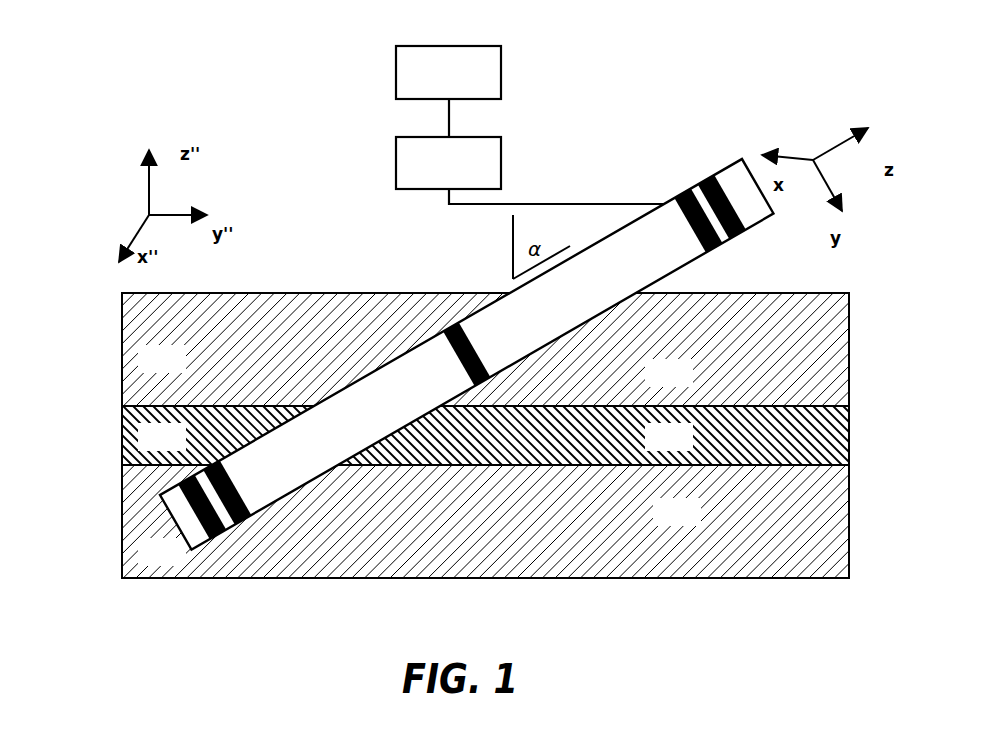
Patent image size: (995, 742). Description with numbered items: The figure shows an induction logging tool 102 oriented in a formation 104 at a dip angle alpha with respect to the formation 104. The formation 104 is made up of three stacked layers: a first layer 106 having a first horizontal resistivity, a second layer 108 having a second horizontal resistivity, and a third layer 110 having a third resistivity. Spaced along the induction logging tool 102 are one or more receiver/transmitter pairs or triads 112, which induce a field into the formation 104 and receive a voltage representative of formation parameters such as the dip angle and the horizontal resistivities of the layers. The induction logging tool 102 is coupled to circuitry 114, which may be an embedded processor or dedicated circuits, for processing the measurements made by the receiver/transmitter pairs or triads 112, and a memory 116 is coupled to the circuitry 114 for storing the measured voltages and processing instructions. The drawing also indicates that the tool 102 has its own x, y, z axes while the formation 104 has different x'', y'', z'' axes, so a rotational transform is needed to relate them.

The induction logging tool 102 is at (672, 276).
The formation 104 is at (464, 435).
The first layer 106 is at (849, 361).
The second layer 108 is at (849, 438).
The third layer 110 is at (849, 529).
The receiver/transmitter pairs or triads 112 is at (683, 192).
The circuitry 114 is at (501, 165).
The memory 116 is at (501, 75).